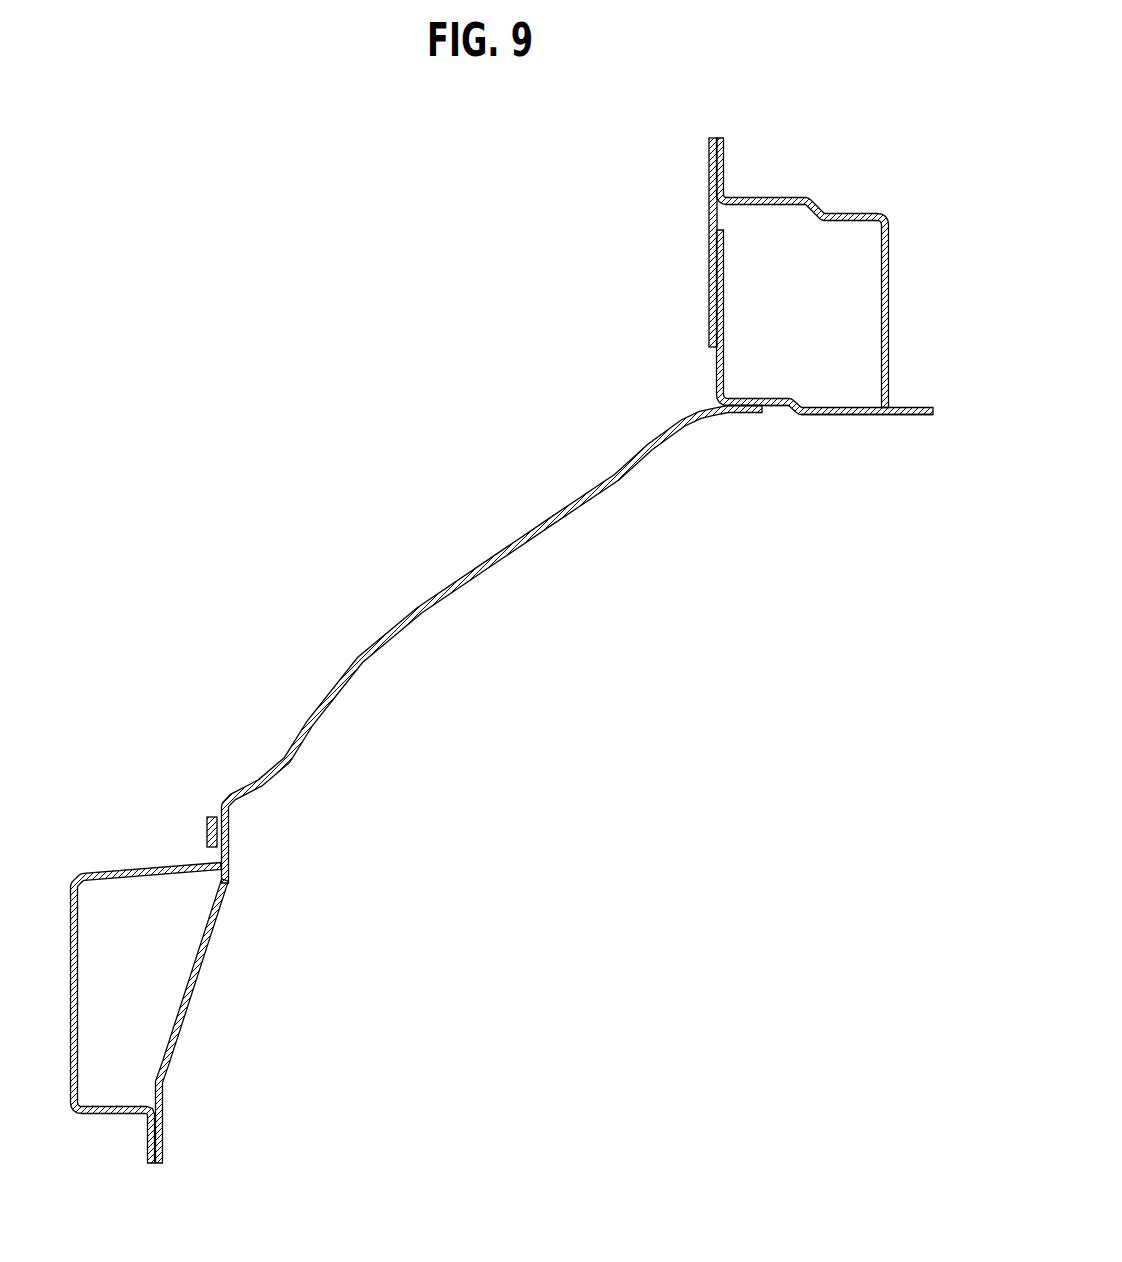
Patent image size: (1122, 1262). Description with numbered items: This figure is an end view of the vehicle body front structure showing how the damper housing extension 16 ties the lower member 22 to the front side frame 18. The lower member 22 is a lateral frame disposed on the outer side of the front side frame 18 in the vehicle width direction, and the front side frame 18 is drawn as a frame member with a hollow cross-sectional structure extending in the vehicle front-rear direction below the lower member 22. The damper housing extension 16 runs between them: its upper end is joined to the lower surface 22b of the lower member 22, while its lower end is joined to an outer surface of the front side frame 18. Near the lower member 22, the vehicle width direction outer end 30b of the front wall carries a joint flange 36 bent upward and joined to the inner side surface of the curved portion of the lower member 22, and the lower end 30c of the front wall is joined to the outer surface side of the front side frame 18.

The damper housing extension 16 is at (435, 577).
The front side frame 18 is at (60, 963).
The lower member 22 is at (700, 208).
The lower surface of the lower member 22b is at (787, 413).
The vehicle width direction outer end of the front wall 30b is at (771, 413).
The lower end of the front wall 30c is at (228, 848).
The joint flange 36 is at (743, 413).